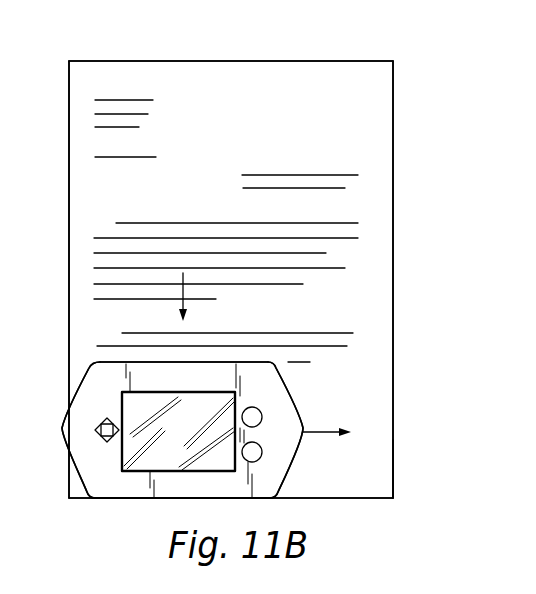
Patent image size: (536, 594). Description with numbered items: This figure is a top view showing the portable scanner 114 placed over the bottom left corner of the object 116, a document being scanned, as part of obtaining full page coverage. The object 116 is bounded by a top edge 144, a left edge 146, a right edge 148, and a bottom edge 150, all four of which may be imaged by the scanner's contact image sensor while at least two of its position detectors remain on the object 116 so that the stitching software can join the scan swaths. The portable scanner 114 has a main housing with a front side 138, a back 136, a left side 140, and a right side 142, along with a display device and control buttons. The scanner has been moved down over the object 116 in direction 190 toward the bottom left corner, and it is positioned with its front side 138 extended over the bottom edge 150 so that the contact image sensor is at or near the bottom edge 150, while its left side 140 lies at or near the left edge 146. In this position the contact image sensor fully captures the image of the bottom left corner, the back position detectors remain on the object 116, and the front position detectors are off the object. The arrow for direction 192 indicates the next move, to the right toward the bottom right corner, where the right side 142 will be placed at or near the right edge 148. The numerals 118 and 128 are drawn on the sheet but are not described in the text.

The portable scanner 114 is at (233, 348).
The object 116 is at (402, 209).
The right edge of sheet 118 is at (393, 338).
The line of text 128 is at (292, 362).
The back 136 is at (158, 362).
The front side 138 is at (120, 499).
The left side 140 is at (62, 427).
The right side 142 is at (305, 436).
The top edge 144 is at (280, 61).
The left edge 146 is at (69, 338).
The right edge 148 is at (393, 482).
The bottom edge 150 is at (363, 498).
The direction 190 is at (178, 290).
The direction 192 is at (327, 432).